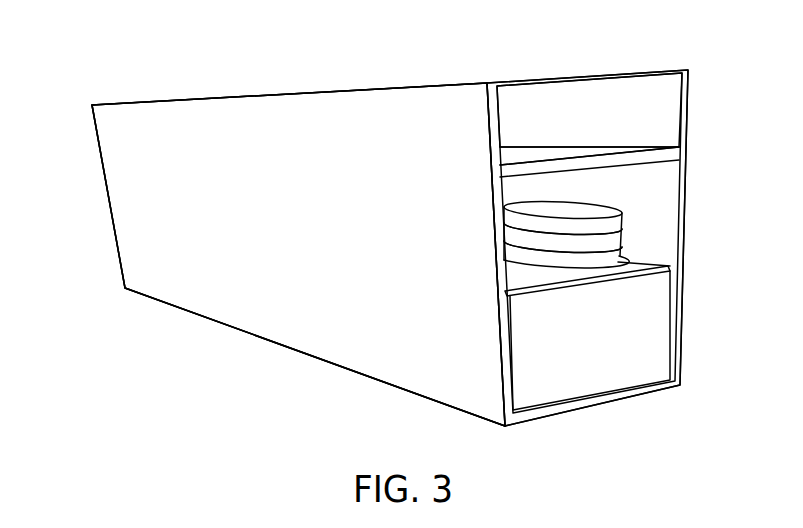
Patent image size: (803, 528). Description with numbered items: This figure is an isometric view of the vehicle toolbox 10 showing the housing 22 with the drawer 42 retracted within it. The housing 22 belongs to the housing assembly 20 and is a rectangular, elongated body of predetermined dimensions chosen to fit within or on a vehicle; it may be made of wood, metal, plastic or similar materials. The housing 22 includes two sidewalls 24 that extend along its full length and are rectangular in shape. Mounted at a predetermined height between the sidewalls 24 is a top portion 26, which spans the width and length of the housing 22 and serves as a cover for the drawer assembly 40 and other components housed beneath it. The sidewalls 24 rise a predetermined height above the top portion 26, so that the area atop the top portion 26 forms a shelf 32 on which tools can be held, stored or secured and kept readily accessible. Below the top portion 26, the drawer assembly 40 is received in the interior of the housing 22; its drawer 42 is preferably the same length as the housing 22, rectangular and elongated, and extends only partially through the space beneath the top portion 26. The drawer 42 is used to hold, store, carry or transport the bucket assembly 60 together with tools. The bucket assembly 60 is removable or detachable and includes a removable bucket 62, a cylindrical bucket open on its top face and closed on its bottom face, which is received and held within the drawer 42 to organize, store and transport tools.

The vehicle toolbox 10 is at (131, 46).
The housing assembly 20 is at (109, 212).
The housing 22 is at (232, 328).
The sidewalls 24 is at (333, 337).
The top portion 26 is at (660, 153).
The shelf 32 is at (535, 153).
The drawer assembly 40 is at (673, 277).
The drawer 42 is at (557, 373).
The bucket assembly 60 is at (622, 243).
The removable bucket 62 is at (532, 252).